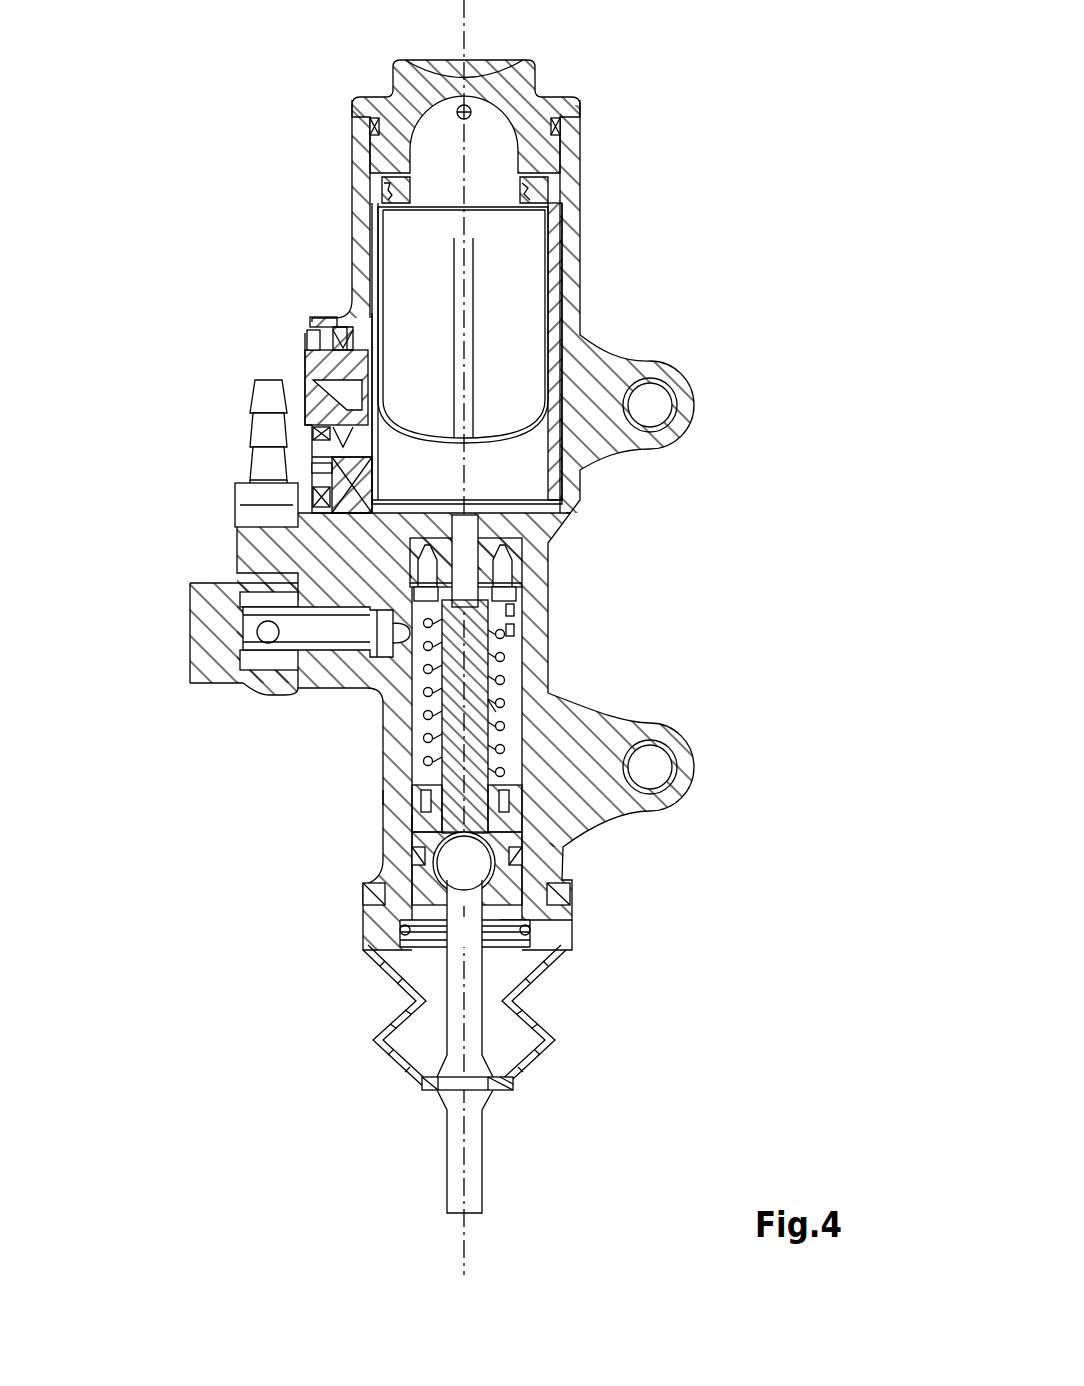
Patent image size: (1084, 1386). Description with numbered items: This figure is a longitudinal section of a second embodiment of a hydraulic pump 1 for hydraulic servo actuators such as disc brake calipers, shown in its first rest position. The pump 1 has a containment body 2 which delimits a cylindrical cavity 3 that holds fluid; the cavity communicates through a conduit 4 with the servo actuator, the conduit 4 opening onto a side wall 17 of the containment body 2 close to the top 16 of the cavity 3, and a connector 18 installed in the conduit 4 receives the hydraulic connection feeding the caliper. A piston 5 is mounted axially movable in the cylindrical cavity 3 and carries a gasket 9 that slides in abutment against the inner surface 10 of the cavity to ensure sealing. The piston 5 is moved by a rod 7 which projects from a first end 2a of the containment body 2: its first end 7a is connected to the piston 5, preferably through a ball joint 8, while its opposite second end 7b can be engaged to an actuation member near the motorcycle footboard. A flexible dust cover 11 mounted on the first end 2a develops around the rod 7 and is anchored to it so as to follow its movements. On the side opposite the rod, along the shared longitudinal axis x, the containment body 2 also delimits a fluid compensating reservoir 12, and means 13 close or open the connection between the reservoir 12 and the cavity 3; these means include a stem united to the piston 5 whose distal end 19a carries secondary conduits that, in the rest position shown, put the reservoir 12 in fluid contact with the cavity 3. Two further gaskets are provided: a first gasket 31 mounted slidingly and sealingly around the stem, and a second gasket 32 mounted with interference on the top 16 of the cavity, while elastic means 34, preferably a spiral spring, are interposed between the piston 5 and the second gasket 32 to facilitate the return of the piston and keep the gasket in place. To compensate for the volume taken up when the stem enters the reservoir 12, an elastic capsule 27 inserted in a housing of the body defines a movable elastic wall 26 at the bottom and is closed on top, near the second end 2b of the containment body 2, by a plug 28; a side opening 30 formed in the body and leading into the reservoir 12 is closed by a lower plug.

The hydraulic pump 1 is at (247, 135).
The longitudinal axis x is at (468, 30).
The containment body 2 is at (652, 353).
The first end of the containment body 2a is at (368, 903).
The second end of the containment body 2b is at (578, 117).
The cylindrical cavity 3 is at (510, 647).
The conduit 4 is at (380, 697).
The piston 5 is at (508, 892).
The rod 7 is at (475, 1138).
The first end of the rod 7a is at (525, 928).
The second end of the rod 7b is at (457, 1212).
The ball joint 8 is at (450, 867).
The gasket 9 is at (523, 853).
The inner surface 10 is at (507, 758).
The flexible dust cover 11 is at (557, 1032).
The fluid compensating reservoir 12 is at (527, 468).
The means for closing or opening the connection 13 is at (528, 585).
The top of the cavity 16 is at (522, 612).
The side wall 17 is at (392, 797).
The connector 18 is at (262, 405).
The distal end of the stem 19a is at (571, 513).
The wall 26 is at (633, 372).
The elastic capsule 27 is at (555, 248).
The plug 28 is at (542, 110).
The side opening 30 is at (308, 342).
The first gasket 31 is at (417, 822).
The second gasket 32 is at (497, 518).
The elastic means 34 is at (490, 707).